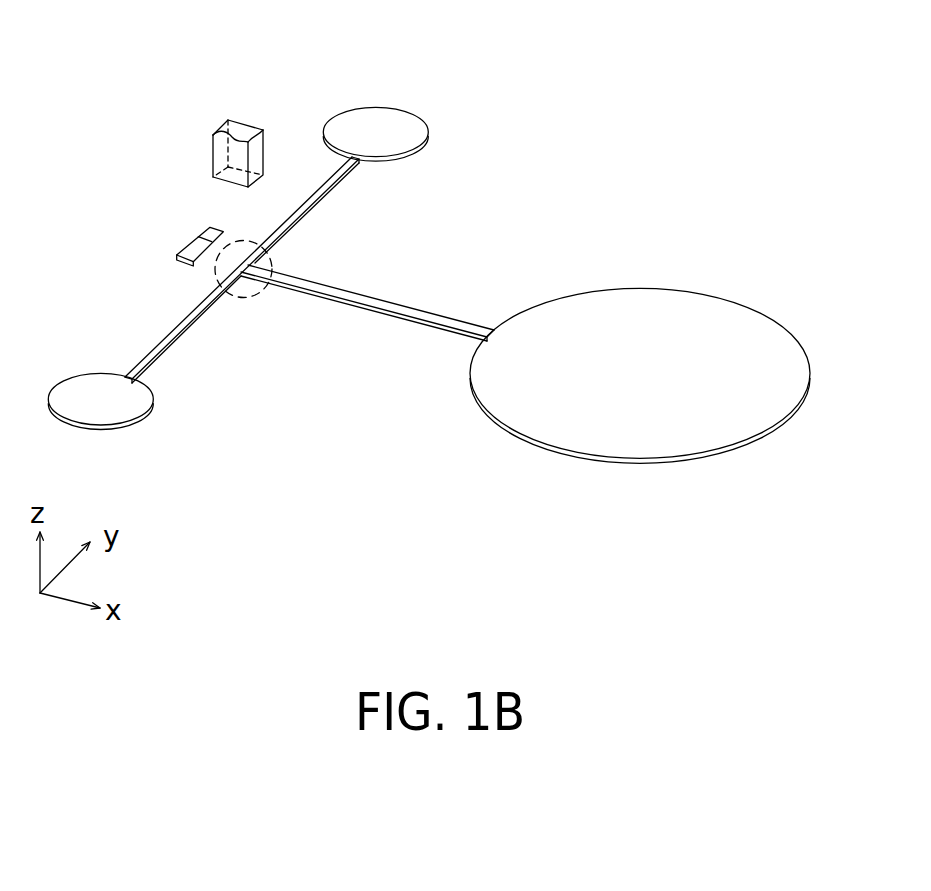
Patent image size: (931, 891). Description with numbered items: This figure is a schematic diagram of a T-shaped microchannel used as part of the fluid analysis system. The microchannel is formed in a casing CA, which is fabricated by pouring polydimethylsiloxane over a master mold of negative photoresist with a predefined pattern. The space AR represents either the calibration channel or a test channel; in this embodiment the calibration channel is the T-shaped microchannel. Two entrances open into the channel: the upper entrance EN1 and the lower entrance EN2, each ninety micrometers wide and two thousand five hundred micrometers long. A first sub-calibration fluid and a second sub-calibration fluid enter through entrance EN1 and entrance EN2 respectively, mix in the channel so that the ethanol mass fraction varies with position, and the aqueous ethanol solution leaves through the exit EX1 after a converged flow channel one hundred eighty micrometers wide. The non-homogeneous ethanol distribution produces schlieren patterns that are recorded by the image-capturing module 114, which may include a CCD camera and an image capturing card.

The image-capturing module 114 is at (218, 148).
The entrance EN1 is at (352, 155).
The entrance EN2 is at (114, 383).
The exit EX1 is at (498, 343).
The space AR is at (270, 254).
The casing CA is at (798, 558).